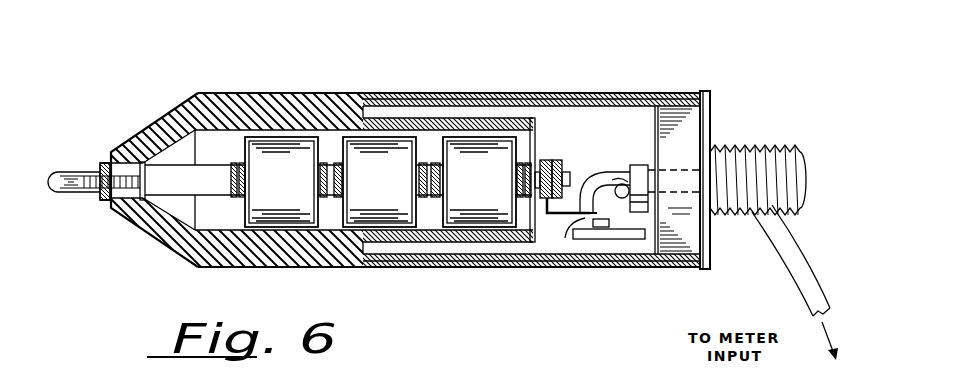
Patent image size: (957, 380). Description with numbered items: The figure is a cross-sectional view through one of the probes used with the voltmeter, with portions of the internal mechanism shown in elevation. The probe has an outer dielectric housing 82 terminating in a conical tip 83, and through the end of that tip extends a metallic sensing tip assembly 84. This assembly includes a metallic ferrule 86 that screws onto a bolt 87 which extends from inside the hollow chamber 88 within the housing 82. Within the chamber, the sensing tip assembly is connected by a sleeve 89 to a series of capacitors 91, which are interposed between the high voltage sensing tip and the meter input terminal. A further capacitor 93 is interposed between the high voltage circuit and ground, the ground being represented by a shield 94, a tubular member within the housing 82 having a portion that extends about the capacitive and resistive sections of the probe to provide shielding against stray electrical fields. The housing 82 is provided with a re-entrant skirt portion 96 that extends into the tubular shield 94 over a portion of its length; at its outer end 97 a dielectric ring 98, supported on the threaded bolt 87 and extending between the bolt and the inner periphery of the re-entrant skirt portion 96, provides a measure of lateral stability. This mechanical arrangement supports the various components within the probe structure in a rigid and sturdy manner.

The outer dielectric housing 82 is at (298, 105).
The conical tip 83 is at (147, 141).
The metallic sensing tip assembly 84 is at (97, 206).
The metallic ferrule 86 is at (53, 177).
The bolt 87 is at (95, 172).
The hollow chamber 88 is at (217, 138).
The sleeve 89 is at (336, 181).
The capacitors 91 is at (296, 193).
The capacitor 93 is at (603, 236).
The shield 94 is at (562, 107).
The re-entrant skirt portion 96 is at (460, 123).
The outer end 97 is at (536, 121).
The dielectric ring 98 is at (537, 156).